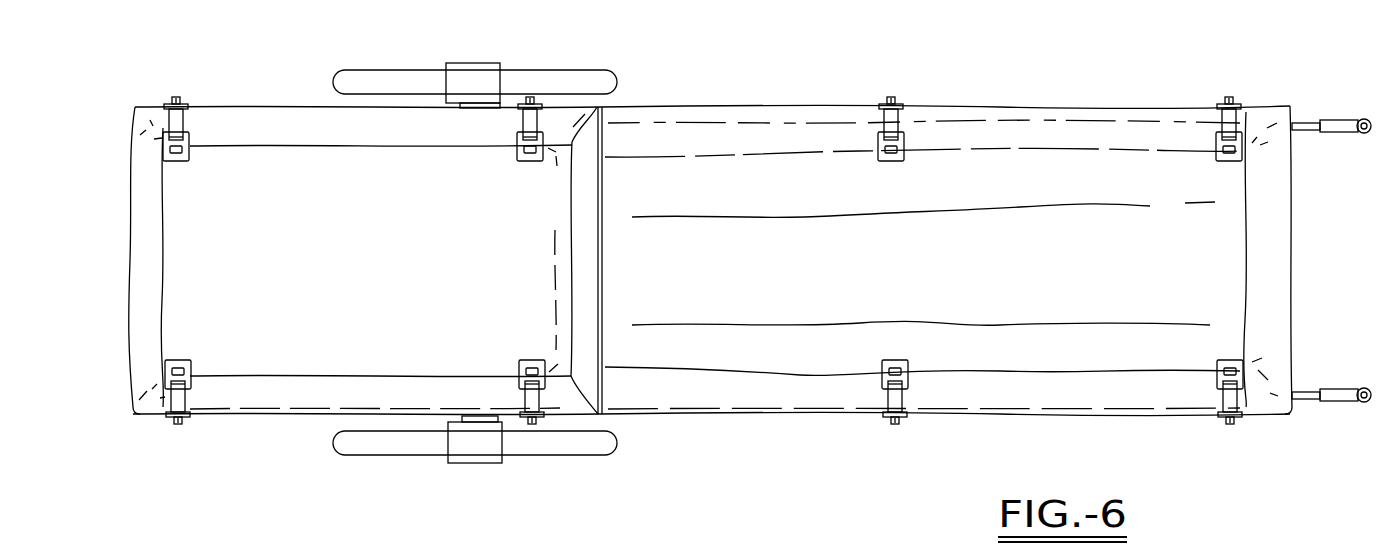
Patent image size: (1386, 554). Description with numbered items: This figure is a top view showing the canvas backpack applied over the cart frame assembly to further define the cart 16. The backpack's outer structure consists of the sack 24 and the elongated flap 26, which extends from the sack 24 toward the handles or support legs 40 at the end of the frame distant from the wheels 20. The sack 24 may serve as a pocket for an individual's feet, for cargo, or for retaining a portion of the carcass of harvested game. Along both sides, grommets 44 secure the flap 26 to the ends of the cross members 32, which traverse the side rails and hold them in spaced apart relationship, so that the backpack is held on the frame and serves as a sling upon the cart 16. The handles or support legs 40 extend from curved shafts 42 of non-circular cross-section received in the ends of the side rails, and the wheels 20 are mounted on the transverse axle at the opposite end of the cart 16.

The cart 16 is at (799, 96).
The wheels 20 is at (413, 70).
The sack 24 is at (333, 166).
The elongated flap 26 is at (997, 156).
The cross members 32 is at (1236, 99).
The handles or support legs 40 is at (1330, 131).
The curved shaft 42 is at (1323, 403).
The grommets 44 is at (895, 105).